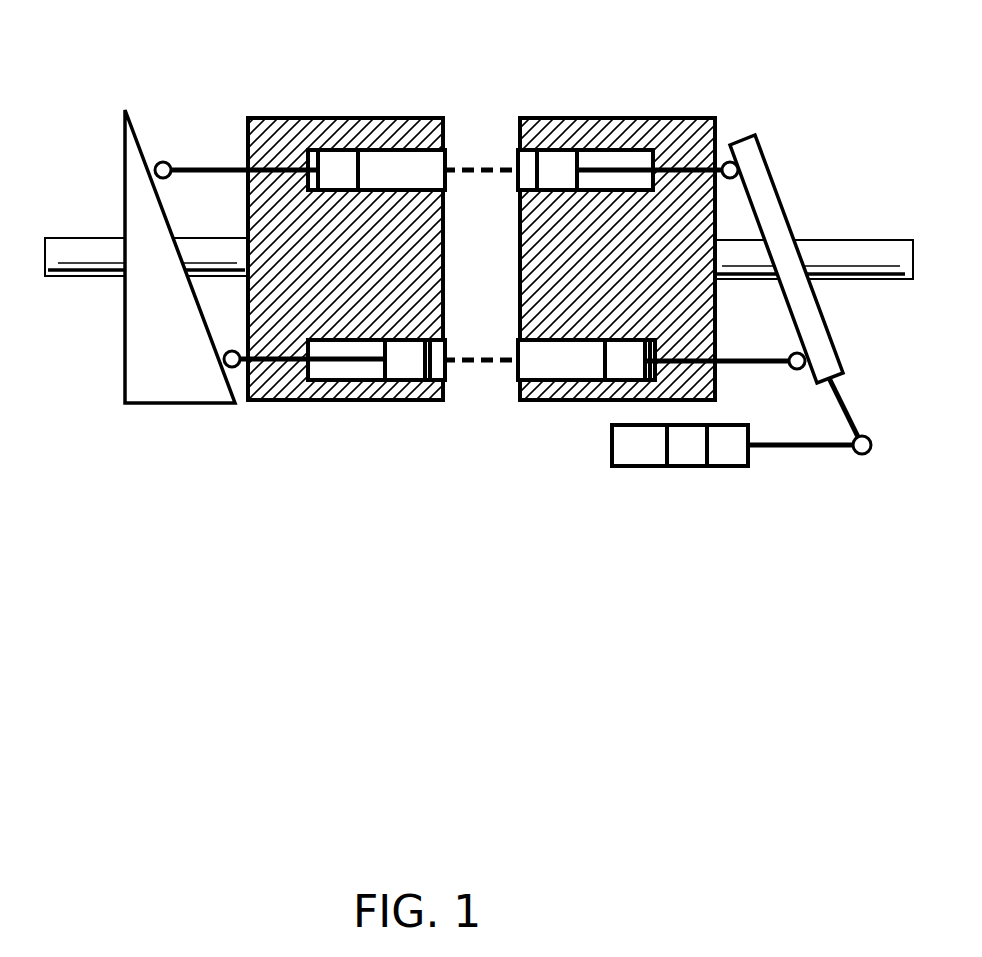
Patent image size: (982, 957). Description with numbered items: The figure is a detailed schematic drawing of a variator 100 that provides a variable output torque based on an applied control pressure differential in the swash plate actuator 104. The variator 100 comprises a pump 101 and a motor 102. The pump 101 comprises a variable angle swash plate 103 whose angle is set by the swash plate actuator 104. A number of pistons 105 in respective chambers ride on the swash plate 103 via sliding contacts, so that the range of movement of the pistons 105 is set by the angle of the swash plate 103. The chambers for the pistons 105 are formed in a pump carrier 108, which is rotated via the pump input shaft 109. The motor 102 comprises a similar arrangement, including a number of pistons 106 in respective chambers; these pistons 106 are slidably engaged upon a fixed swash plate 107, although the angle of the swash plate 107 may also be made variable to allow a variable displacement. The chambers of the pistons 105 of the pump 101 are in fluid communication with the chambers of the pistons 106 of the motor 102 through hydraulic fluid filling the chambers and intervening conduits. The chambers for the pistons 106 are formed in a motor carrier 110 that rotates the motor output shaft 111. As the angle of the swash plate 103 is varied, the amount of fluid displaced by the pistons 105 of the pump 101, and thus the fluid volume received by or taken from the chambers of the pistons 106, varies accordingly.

The variator 100 is at (570, 615).
The pump 101 is at (498, 100).
The motor 102 is at (113, 100).
The variable angle swash plate 103 is at (810, 318).
The swash plate actuator 104 is at (697, 475).
The pistons 105 is at (625, 350).
The pistons 106 is at (405, 347).
The fixed swash plate 107 is at (190, 393).
The pump carrier 108 is at (652, 306).
The pump input shaft 109 is at (878, 255).
The motor carrier 110 is at (300, 305).
The motor output shaft 111 is at (62, 247).